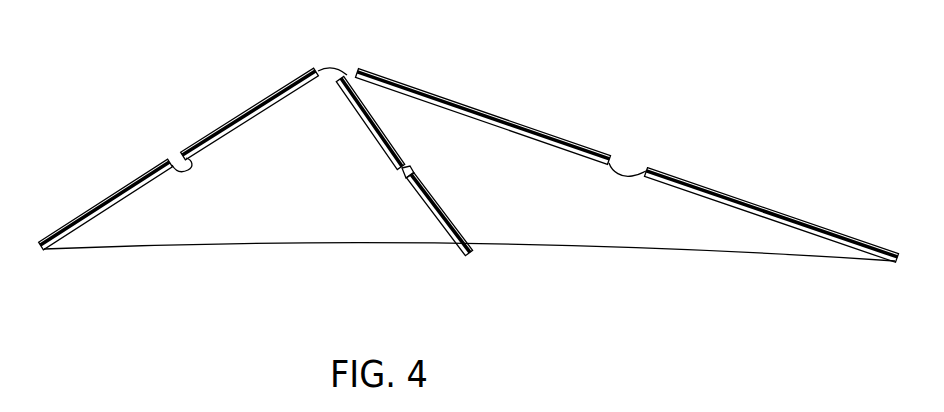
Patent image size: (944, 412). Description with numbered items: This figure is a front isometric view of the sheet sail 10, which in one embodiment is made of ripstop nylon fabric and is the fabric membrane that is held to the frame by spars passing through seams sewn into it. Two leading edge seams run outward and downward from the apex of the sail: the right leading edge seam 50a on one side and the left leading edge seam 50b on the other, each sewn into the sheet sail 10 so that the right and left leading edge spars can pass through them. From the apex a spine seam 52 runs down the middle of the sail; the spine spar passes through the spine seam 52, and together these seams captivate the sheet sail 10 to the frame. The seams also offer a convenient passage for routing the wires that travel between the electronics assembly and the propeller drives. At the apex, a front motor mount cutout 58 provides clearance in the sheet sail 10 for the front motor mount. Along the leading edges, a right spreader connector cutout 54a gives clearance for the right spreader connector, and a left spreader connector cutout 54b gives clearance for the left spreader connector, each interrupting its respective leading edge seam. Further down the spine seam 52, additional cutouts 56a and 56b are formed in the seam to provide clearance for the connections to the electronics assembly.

The sheet sail 10 is at (531, 215).
The right leading edge seam 50a is at (207, 132).
The left leading edge seam 50b is at (540, 131).
The spine seam 52 is at (387, 127).
The right spreader connector cutout 54a is at (182, 163).
The left spreader connector cutout 54b is at (630, 170).
The additional cutout 56a is at (398, 168).
The additional cutout 56b is at (451, 236).
The front motor mount cutout 58 is at (327, 67).